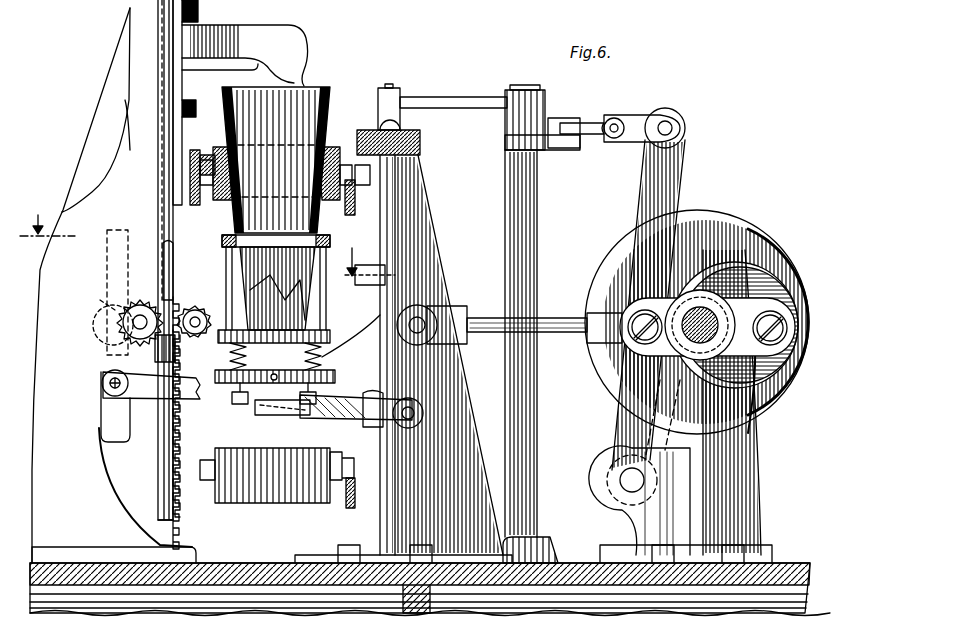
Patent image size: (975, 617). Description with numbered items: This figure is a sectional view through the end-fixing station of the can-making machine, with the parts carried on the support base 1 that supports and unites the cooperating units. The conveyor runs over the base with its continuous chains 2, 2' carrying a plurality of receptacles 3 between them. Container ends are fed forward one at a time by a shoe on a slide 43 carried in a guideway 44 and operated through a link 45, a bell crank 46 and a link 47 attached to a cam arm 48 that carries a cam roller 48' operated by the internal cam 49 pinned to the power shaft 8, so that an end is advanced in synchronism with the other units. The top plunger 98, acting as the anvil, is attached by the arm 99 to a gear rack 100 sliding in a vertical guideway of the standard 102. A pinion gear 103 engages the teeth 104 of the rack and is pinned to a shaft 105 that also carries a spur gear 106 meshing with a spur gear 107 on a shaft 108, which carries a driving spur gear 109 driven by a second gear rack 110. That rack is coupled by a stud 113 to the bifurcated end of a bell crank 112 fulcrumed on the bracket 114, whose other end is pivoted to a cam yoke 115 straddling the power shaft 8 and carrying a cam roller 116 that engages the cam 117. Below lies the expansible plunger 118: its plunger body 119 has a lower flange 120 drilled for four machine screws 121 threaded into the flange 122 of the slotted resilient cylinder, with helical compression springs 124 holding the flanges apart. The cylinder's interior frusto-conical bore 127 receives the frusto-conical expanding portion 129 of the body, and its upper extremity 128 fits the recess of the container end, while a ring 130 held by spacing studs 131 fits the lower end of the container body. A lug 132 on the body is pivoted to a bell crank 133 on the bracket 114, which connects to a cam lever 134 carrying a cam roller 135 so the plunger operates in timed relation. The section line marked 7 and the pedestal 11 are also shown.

The support base 1 is at (240, 574).
The continuous chain 2 is at (339, 343).
The continuous chain 2' is at (378, 180).
The receptacle 3 is at (280, 498).
The section line 7 is at (191, 245).
The power shaft 8 is at (740, 433).
The pedestal 11 is at (745, 497).
The slide 43 is at (400, 128).
The guideway 44 is at (420, 145).
The link 45 is at (398, 112).
The bell crank 46 is at (454, 100).
The link 47 is at (588, 126).
The cam arm 48 is at (665, 289).
The cam roller 48' is at (626, 415).
The internal cam 49 is at (712, 225).
The top plunger 98 is at (300, 100).
The arm 99 is at (245, 40).
The gear rack 100 is at (160, 38).
The standard 102 is at (136, 105).
The pinion gear 103 is at (202, 310).
The teeth 104 is at (178, 418).
The shaft 105 is at (200, 318).
The spur gear 106 is at (182, 351).
The spur gear 107 is at (100, 300).
The shaft 108 is at (133, 325).
The driving spur gear 109 is at (112, 315).
The gear rack 110 is at (105, 403).
The bell crank 112 is at (150, 405).
The stud 113 is at (102, 385).
The bracket 114 is at (462, 396).
The cam yoke 115 is at (478, 318).
The cam roller 116 is at (640, 317).
The cam 117 is at (690, 298).
The expansible plunger 118 is at (372, 266).
The plunger body 119 is at (330, 336).
The flange 120 is at (335, 375).
The machine screw 121 is at (228, 398).
The flange 122 is at (380, 315).
The helical compression spring 124 is at (322, 355).
The frusto-conical bore 127 is at (335, 259).
The upper extremity of the cylinder 128 is at (258, 260).
The frusto-conical expanding portion 129 is at (305, 165).
The ring 130 is at (205, 213).
The spacing stud 131 is at (222, 250).
The lug 132 is at (268, 415).
The bell crank 133 is at (338, 420).
The cam lever 134 is at (798, 265).
The cam roller 135 is at (740, 395).